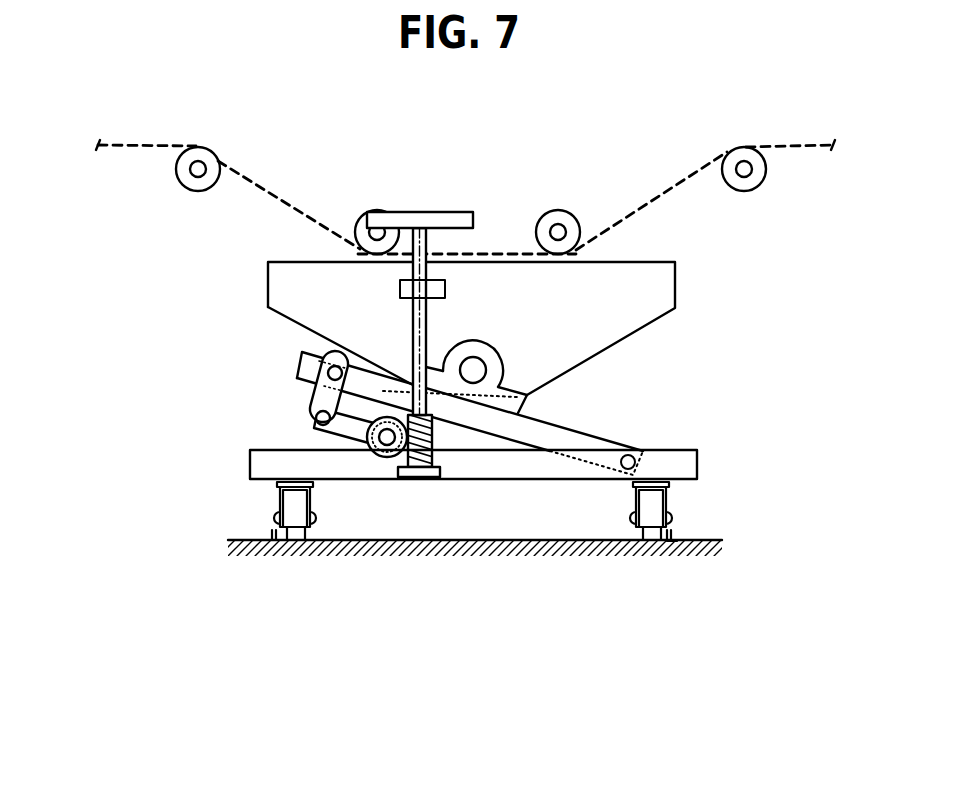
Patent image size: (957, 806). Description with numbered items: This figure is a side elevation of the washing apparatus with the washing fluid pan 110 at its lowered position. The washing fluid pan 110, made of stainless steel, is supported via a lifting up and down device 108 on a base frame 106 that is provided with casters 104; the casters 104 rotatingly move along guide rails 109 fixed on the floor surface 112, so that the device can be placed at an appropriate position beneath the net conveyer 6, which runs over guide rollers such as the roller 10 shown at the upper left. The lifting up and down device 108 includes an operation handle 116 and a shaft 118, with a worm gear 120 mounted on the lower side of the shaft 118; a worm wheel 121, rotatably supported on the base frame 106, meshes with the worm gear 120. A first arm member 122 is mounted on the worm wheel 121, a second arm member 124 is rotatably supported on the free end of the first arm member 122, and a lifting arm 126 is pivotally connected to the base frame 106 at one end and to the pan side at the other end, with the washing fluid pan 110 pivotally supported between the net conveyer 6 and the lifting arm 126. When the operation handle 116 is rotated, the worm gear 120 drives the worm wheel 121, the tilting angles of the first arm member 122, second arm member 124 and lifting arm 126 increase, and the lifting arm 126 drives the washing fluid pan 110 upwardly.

The net conveyer 6 is at (781, 145).
The guide roller 10 is at (178, 168).
The casters 104 is at (297, 500).
The base frame 106 is at (497, 470).
The lifting up and down device 108 is at (411, 462).
The guide rails 109 is at (278, 540).
The washing fluid pan 110 is at (643, 322).
The floor surface 112 is at (707, 540).
The operation handle 116 is at (412, 212).
The shaft 118 is at (418, 347).
The worm gear 120 is at (447, 440).
The worm wheel 121 is at (370, 448).
The first arm member 122 is at (346, 428).
The second arm member 124 is at (320, 392).
The lifting arm 126 is at (550, 430).